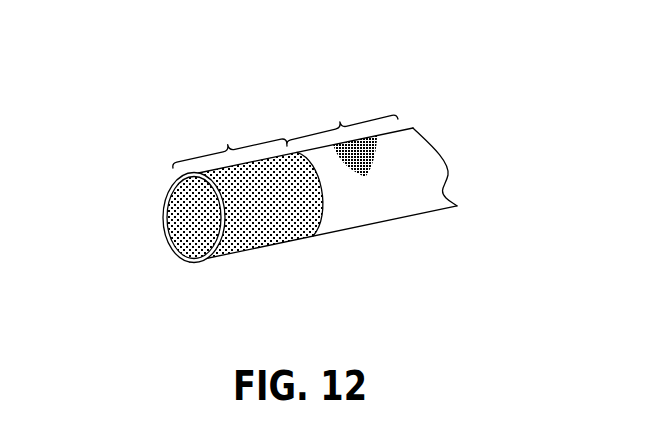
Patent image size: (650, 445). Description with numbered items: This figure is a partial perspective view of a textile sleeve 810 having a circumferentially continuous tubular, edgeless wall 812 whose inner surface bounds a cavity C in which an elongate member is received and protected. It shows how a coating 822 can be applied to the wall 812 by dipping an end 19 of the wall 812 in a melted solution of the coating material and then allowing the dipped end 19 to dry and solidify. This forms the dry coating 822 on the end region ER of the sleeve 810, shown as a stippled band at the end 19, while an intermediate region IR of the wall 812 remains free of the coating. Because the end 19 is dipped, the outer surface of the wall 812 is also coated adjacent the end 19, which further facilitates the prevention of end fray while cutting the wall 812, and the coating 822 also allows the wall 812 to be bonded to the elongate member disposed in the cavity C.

The textile sleeve 810 is at (268, 202).
The wall 812 is at (415, 222).
The coating 822 is at (212, 239).
The end 19 is at (187, 258).
The cavity C is at (157, 236).
The end region ER is at (229, 142).
The intermediate region IR is at (341, 118).